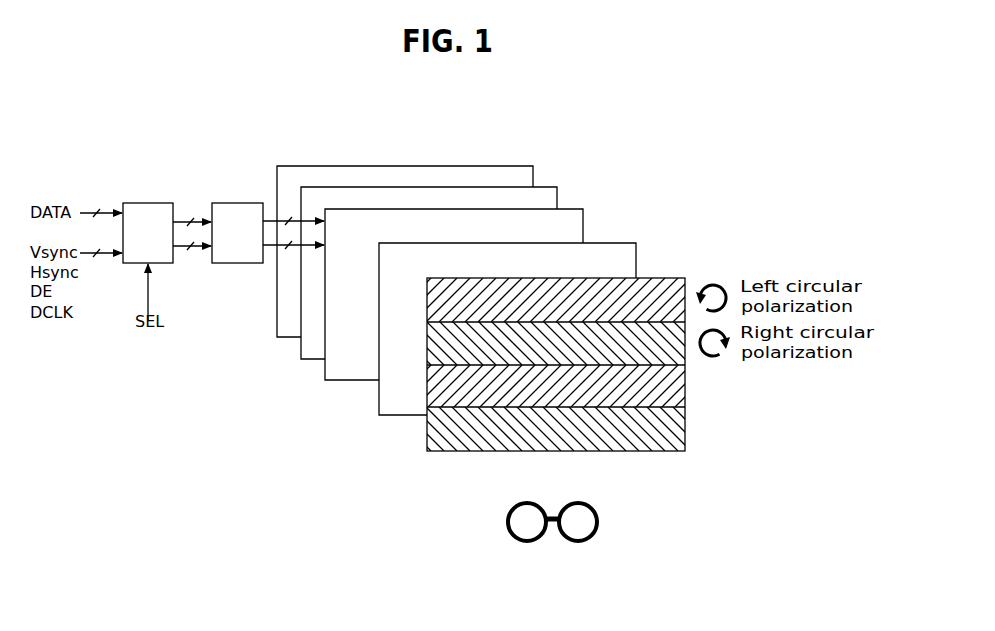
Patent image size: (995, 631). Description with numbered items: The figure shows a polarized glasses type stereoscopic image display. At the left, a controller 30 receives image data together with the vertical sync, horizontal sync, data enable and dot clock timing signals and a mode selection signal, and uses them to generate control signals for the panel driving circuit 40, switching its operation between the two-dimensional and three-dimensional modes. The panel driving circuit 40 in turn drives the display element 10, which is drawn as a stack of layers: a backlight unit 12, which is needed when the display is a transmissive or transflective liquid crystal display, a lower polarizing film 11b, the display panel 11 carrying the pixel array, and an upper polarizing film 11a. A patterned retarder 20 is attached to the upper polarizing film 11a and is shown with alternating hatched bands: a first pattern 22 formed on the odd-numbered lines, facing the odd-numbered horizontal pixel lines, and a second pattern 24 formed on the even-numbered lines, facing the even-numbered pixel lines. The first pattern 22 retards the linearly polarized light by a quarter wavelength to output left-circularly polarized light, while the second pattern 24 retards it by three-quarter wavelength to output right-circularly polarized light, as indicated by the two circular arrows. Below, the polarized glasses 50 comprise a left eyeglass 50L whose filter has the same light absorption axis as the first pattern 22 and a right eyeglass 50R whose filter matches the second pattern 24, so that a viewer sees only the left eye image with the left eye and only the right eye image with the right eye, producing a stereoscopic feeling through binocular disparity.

The display element 10 is at (648, 197).
The display panel 11 is at (573, 207).
The upper polarizing film 11a is at (609, 242).
The lower polarizing film 11b is at (545, 186).
The backlight unit 12 is at (525, 165).
The patterned retarder 20 is at (567, 343).
The first pattern 22 is at (686, 385).
The second pattern 24 is at (686, 425).
The controller 30 is at (157, 242).
The panel driving circuit 40 is at (246, 242).
The polarized glasses 50 is at (594, 546).
The left eyeglass 50L is at (526, 542).
The right eyeglass 50R is at (579, 542).